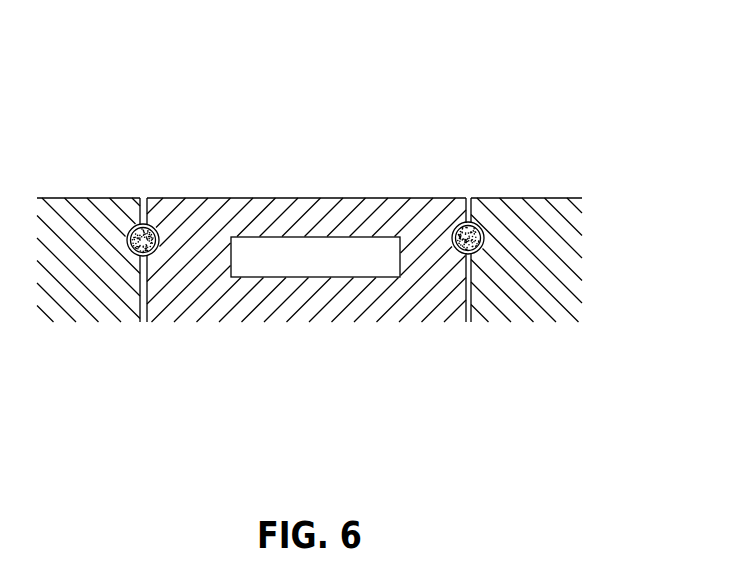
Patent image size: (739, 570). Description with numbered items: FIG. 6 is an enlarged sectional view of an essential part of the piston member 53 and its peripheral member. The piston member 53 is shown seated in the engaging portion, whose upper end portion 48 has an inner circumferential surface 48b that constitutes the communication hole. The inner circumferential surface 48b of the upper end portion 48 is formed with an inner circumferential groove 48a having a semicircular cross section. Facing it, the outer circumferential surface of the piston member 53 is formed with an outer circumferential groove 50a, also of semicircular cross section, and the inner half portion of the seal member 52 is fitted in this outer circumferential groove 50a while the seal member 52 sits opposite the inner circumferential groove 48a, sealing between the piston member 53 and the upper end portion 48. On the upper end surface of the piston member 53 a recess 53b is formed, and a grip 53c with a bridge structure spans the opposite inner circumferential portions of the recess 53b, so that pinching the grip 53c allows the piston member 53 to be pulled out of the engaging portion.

The upper end portion 48 is at (67, 198).
The inner circumferential groove 48a is at (128, 228).
The inner circumferential surface 48b is at (142, 289).
The outer circumferential groove 50a is at (163, 235).
The seal member 52 is at (475, 227).
The piston member 53 is at (327, 191).
The recess 53b is at (303, 263).
The grip 53c is at (303, 198).